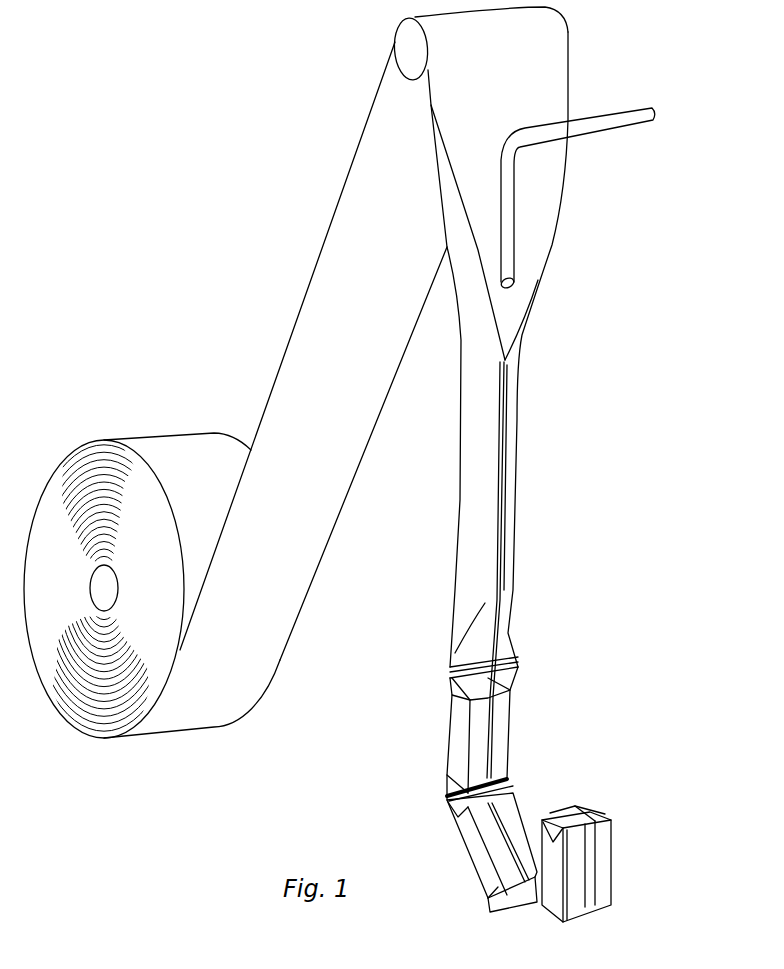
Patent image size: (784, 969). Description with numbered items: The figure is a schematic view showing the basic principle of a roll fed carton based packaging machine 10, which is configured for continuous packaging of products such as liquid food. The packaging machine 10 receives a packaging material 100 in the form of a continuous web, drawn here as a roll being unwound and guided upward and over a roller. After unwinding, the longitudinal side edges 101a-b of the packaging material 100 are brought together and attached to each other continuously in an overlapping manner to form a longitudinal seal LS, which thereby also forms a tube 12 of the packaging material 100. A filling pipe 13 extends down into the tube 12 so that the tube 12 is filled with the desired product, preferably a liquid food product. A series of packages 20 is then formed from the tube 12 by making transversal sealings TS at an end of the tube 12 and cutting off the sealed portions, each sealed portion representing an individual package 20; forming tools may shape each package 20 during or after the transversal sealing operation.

The packaging machine 10 is at (336, 84).
The packaging material 100 is at (292, 573).
The tube 12 is at (472, 476).
The filling pipe 13 is at (615, 125).
The longitudinal side edges 101a-b is at (470, 217).
The longitudinal seal LS is at (503, 398).
The transversal sealing TS is at (512, 680).
The package 20 is at (600, 858).